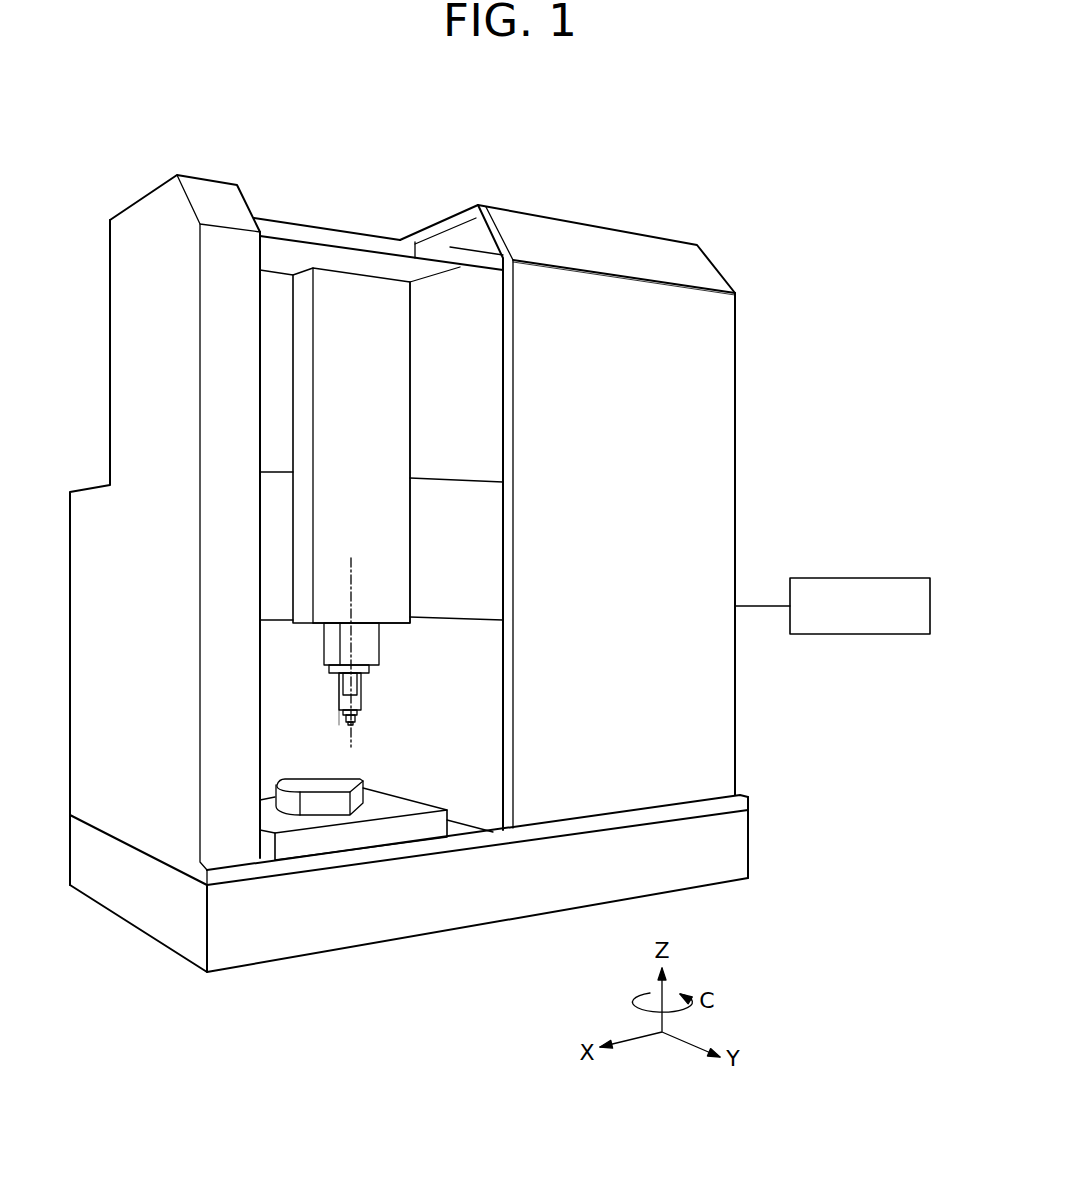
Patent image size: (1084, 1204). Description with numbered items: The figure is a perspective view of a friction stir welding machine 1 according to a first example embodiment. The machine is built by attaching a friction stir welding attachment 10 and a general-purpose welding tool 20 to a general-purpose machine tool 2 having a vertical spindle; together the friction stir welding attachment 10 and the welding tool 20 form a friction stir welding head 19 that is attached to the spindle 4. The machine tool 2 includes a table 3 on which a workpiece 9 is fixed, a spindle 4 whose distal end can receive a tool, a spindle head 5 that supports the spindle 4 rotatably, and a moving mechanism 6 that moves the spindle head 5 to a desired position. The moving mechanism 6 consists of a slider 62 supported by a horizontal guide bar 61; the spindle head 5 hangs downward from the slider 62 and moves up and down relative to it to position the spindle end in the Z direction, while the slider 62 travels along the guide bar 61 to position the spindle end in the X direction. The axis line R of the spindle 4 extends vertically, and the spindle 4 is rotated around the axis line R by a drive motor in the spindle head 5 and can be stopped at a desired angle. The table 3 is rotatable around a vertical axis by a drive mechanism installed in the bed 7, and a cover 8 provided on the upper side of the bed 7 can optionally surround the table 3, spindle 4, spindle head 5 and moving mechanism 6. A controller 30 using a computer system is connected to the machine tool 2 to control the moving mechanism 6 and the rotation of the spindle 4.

The friction stir welding machine 1 is at (622, 170).
The machine tool 2 is at (775, 347).
The table 3 is at (323, 838).
The spindle 4 is at (370, 670).
The spindle head 5 is at (363, 648).
The moving mechanism 6 is at (382, 452).
The guide bar 61 is at (468, 572).
The slider 62 is at (388, 520).
The bed 7 is at (727, 852).
The cover 8 is at (710, 717).
The workpiece 9 is at (275, 778).
The friction stir welding attachment 10 is at (335, 685).
The friction stir welding head 19 is at (134, 617).
The welding tool 20 is at (335, 713).
The controller 30 is at (860, 578).
The axis line R is at (350, 568).